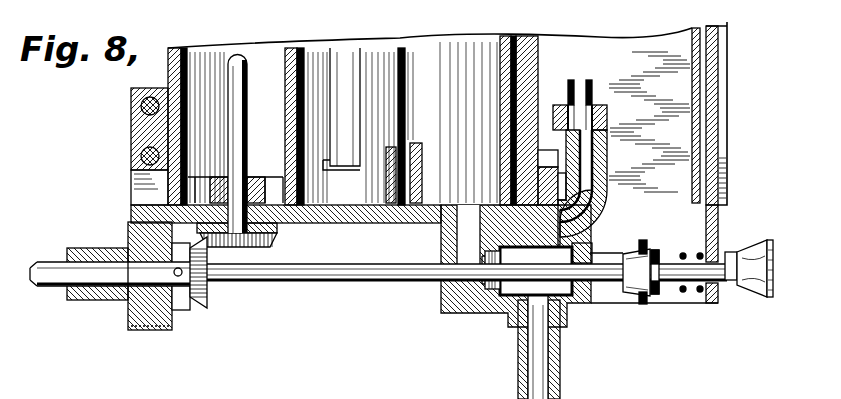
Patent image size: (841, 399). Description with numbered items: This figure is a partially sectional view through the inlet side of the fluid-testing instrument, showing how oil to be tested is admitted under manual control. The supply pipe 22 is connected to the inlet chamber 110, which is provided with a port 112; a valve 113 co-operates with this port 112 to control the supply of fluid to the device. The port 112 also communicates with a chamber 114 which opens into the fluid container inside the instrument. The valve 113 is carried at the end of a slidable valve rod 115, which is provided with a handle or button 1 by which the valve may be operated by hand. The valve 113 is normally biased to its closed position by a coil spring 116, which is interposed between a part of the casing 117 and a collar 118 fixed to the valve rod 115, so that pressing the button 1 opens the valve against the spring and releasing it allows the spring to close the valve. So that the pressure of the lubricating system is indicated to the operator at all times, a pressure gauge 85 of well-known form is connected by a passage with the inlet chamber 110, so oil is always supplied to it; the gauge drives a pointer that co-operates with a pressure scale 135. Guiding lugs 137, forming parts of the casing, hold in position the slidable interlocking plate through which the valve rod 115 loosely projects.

The handle or button 1 is at (768, 305).
The supply pipe 22 is at (559, 358).
The pressure gauge 85 is at (589, 80).
The inlet chamber 110 is at (579, 270).
The port 112 is at (493, 273).
The valve 113 is at (496, 287).
The chamber 114 is at (468, 258).
The slidable valve rod 115 is at (558, 268).
The coil spring 116 is at (685, 296).
The casing part 117 is at (714, 307).
The collar 118 is at (656, 304).
The pressure scale 135 is at (646, 236).
The guiding lugs 137 is at (583, 167).